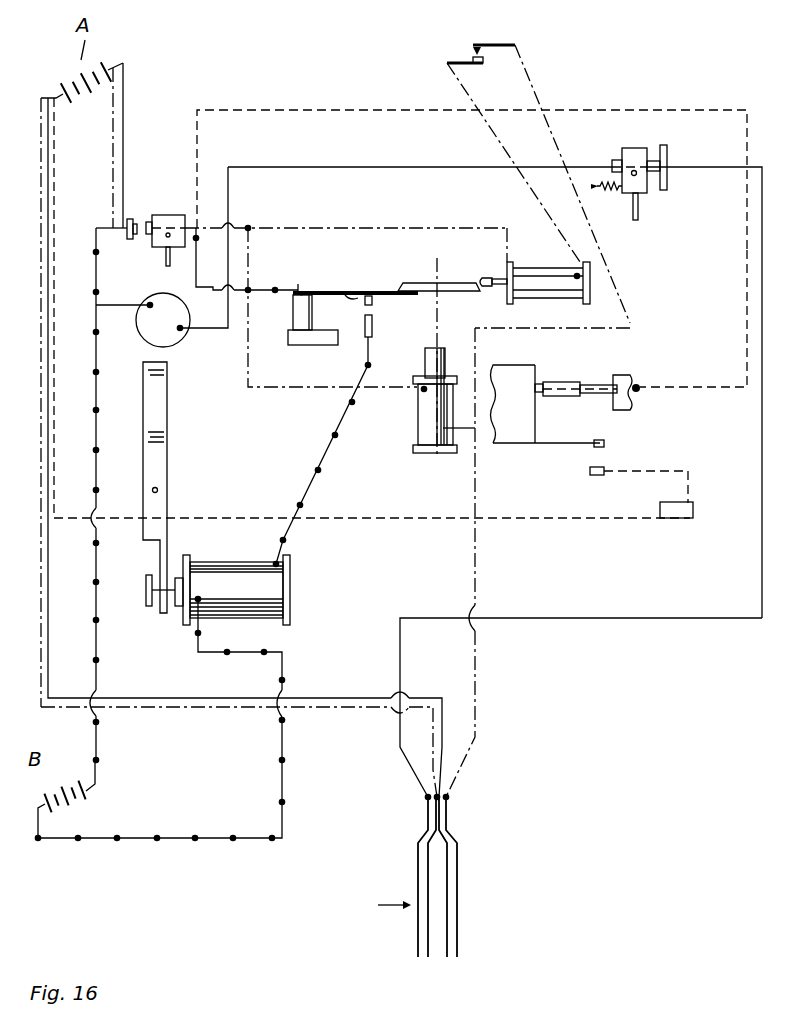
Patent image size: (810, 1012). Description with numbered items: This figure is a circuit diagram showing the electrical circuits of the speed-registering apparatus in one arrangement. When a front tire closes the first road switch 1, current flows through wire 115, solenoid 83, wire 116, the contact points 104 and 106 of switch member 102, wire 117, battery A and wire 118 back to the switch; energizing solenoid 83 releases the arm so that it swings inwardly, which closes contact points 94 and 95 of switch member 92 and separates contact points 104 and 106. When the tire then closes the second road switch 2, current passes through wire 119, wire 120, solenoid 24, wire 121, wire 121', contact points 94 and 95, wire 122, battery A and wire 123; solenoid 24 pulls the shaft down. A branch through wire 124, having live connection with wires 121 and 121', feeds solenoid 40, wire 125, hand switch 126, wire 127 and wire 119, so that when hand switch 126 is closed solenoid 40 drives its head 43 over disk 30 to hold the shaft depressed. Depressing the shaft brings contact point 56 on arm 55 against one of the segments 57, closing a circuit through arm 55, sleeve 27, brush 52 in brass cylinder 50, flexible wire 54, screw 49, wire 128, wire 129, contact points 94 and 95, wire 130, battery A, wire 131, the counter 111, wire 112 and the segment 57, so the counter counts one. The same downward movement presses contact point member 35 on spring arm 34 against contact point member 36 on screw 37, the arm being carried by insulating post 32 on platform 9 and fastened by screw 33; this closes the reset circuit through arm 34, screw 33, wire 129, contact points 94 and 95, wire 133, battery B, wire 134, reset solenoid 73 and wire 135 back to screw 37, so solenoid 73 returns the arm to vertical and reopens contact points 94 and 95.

The first road switch 1 is at (423, 952).
The second road switch 2 is at (453, 956).
The platform 9 is at (318, 343).
The solenoid 24 is at (413, 418).
The metal sleeve 27 is at (516, 370).
The disk 30 is at (459, 283).
The post 32 is at (300, 312).
The screw 33 is at (303, 288).
The spring arm 34 is at (386, 290).
The contact point member 35 is at (352, 287).
The contact point member 36 is at (374, 313).
The screw 37 is at (373, 333).
The solenoid 40 is at (540, 270).
The head 43 is at (485, 272).
The metal screw 49 is at (641, 385).
The brass cylinder 50 is at (158, 422).
The brush 52 is at (541, 382).
The flexible wire 54 is at (578, 388).
The arm 55 is at (553, 443).
The contact point 56 is at (604, 440).
The segments 57 is at (591, 476).
The reset solenoid 73 is at (265, 582).
The solenoid 83 is at (170, 332).
The switch member 92 is at (178, 212).
The contact point 94 is at (152, 221).
The stationary contact point 95 is at (135, 216).
The switch member 102 is at (620, 151).
The stationary contact point 104 is at (667, 161).
The contact point 106 is at (655, 150).
The counter 111 is at (694, 512).
The wire 112 is at (668, 470).
The wire 115 is at (637, 617).
The wire 116 is at (322, 166).
The wire 117 is at (118, 276).
The wire 118 is at (44, 380).
The wire 119 is at (476, 668).
The wire 120 is at (461, 450).
The wire 121 is at (332, 325).
The wire 121' is at (346, 216).
The wire 122 is at (113, 148).
The wire 123 is at (41, 237).
The wire 124 is at (512, 241).
The wire 125 is at (490, 125).
The hand switch 126 is at (458, 62).
The wire 127 is at (522, 61).
The wire 128 is at (716, 386).
The wire 129 is at (293, 109).
The wire 130 is at (121, 114).
The wire 131 is at (66, 424).
The wire 133 is at (96, 362).
The wire 134 is at (160, 836).
The wire 135 is at (316, 470).